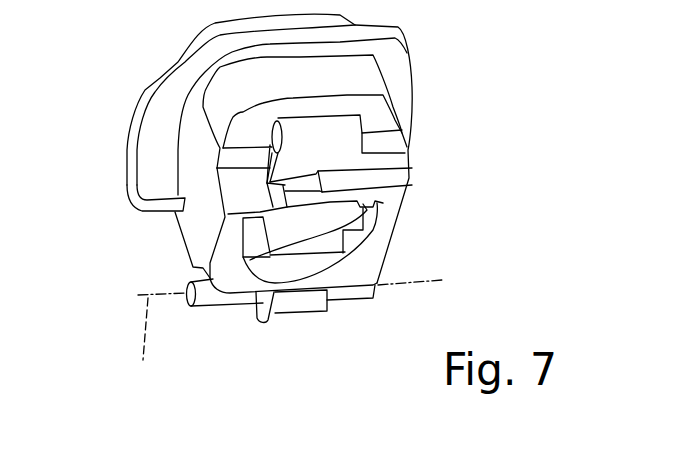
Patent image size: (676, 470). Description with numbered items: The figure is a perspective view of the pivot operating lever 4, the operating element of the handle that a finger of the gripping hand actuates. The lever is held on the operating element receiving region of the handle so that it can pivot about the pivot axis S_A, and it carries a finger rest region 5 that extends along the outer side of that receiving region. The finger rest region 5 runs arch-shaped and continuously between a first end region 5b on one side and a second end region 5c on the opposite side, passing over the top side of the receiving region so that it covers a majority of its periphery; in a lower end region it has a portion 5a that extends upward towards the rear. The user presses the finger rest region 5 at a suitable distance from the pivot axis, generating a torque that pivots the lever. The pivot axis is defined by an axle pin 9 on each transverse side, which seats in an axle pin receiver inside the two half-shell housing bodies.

The pivot operating lever 4 is at (288, 207).
The finger rest region 5 is at (400, 67).
The portion extending upward towards the rear 5a is at (138, 170).
The first end region 5b is at (410, 170).
The second end region 5c is at (140, 204).
The axle pin 9 is at (217, 300).